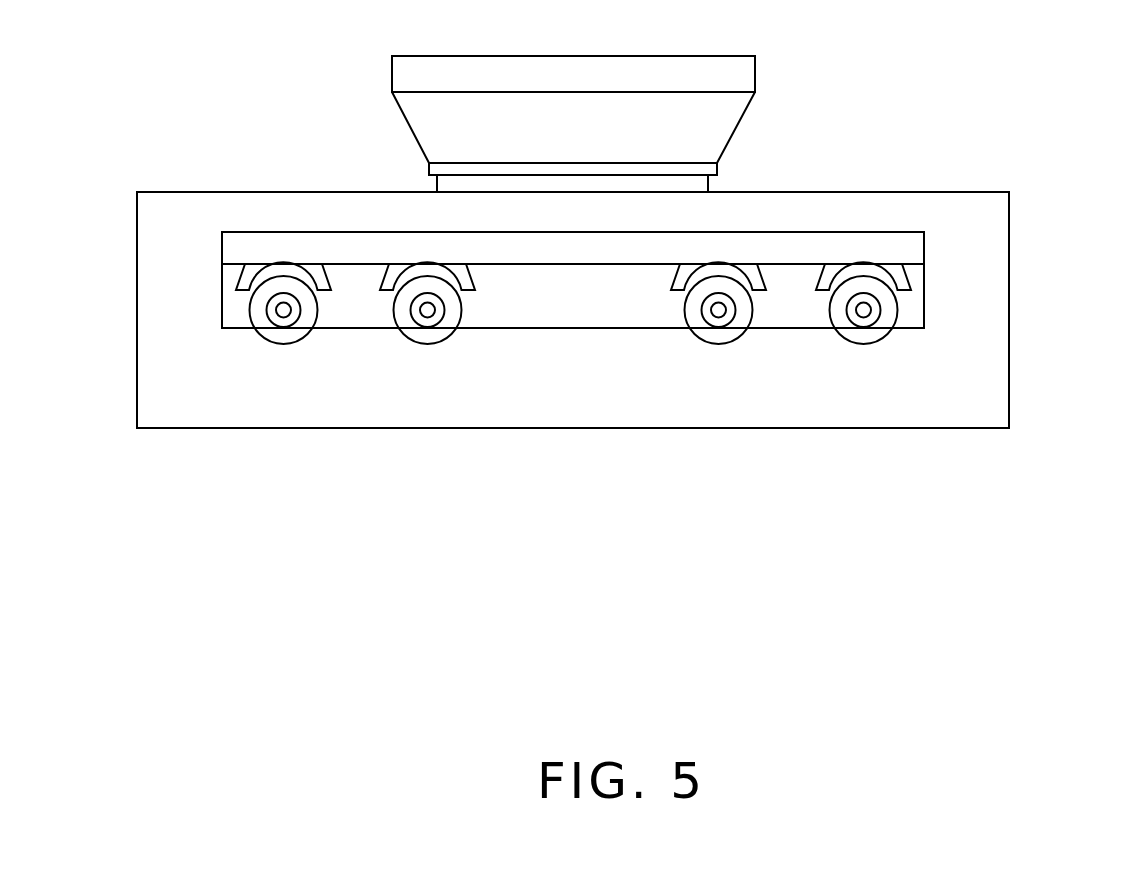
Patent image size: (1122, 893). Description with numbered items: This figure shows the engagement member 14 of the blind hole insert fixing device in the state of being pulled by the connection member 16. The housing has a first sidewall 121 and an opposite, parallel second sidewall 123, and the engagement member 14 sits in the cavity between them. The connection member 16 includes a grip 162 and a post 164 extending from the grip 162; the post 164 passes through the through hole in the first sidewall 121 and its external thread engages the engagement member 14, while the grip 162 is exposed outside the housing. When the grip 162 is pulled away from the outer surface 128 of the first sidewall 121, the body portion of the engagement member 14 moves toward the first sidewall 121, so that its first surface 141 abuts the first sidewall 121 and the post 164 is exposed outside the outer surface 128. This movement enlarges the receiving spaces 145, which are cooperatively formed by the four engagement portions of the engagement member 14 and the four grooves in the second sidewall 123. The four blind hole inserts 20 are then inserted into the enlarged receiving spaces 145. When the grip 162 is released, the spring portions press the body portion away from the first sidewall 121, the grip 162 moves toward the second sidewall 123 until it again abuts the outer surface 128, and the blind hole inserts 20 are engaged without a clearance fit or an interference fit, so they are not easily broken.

The connection member 16 is at (491, 124).
The grip 162 is at (432, 112).
The post 164 is at (430, 185).
The first sidewall 121 is at (848, 222).
The outer surface 128 is at (758, 191).
The second sidewall 123 is at (540, 380).
The engagement member 14 is at (905, 250).
The first surface 141 is at (367, 232).
The receiving spaces 145 is at (275, 273).
The blind hole inserts 20 is at (719, 333).